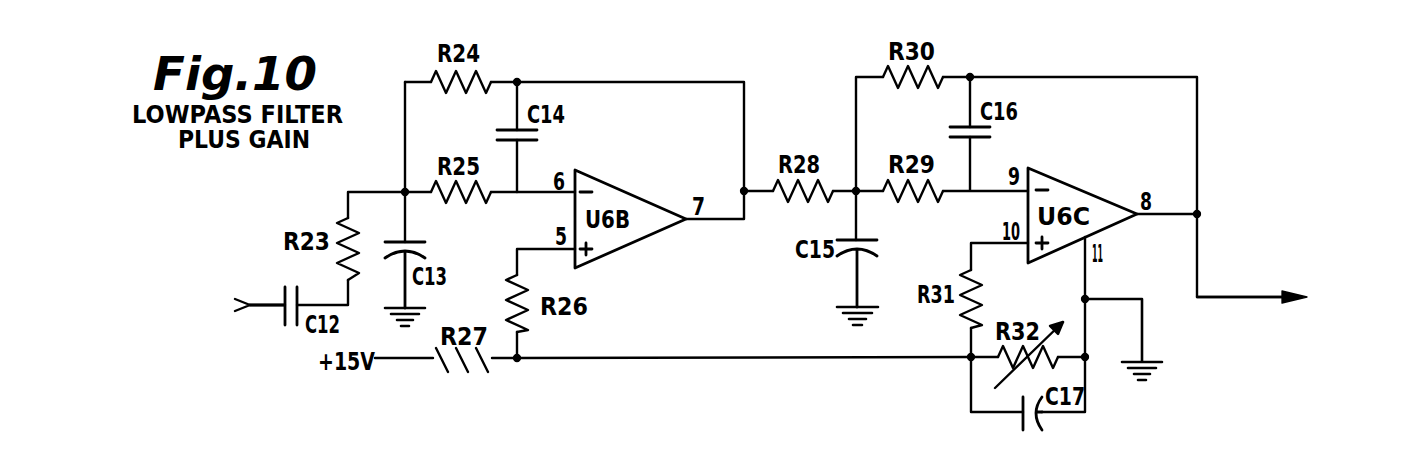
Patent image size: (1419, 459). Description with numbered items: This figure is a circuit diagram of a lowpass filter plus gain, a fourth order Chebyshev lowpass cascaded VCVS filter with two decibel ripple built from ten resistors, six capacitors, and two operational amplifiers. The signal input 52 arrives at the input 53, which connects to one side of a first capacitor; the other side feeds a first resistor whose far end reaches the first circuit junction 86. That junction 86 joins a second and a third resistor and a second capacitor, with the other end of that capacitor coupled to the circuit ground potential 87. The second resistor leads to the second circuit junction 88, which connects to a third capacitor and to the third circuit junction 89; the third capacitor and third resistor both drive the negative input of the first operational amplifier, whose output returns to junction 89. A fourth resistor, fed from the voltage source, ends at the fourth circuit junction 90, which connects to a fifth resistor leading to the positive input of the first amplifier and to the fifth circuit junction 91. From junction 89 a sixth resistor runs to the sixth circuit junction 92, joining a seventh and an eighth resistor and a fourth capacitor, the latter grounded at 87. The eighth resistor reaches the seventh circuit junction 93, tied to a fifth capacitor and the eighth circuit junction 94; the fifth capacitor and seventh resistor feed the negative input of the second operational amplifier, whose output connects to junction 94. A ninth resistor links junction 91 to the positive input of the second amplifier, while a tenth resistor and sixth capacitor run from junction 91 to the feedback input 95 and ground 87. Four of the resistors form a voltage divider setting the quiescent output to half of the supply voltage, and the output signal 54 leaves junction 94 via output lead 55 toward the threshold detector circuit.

The signal input 52 is at (197, 331).
The input 53 is at (257, 305).
The output signal 54 is at (1347, 298).
The output lead 55 is at (1223, 295).
The first circuit junction 86 is at (405, 192).
The circuit ground potential 87 is at (425, 308).
The second circuit junction 88 is at (517, 82).
The third circuit junction 89 is at (744, 191).
The fourth circuit junction 90 is at (517, 358).
The fifth circuit junction 91 is at (971, 357).
The sixth circuit junction 92 is at (856, 191).
The seventh circuit junction 93 is at (970, 77).
The eighth circuit junction 94 is at (1197, 214).
The feedback input 95 is at (1087, 242).